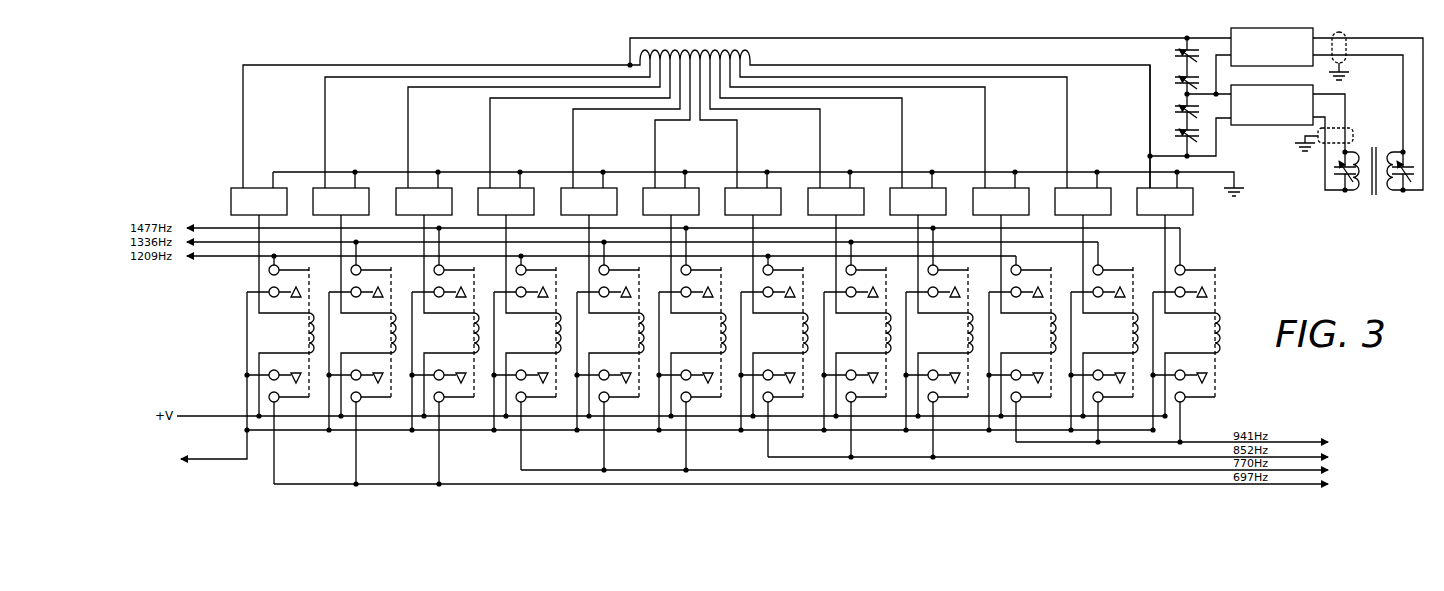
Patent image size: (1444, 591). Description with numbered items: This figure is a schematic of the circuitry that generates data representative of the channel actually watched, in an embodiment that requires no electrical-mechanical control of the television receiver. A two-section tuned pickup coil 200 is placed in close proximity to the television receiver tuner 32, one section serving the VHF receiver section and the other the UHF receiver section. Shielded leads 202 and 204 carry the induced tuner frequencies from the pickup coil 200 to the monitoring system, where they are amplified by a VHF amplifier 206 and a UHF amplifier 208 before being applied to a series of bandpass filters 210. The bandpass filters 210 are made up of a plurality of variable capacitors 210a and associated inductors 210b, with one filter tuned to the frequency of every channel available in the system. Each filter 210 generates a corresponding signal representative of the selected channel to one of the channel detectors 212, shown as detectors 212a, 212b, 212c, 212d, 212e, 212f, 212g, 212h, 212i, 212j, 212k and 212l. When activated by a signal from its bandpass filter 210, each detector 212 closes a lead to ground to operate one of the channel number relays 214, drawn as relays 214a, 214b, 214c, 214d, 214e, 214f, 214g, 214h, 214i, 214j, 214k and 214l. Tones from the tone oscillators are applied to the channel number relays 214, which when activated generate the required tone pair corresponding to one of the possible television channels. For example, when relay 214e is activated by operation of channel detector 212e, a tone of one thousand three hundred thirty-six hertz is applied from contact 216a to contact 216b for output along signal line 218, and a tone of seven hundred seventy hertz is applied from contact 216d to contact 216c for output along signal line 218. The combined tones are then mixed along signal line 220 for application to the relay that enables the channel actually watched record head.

The antenna output terminals (transformer core) 32 is at (1374, 196).
The output transformer 200 is at (1374, 176).
The capacitor to ground 202 is at (1348, 35).
The shielded capacitance 204 is at (1352, 133).
The VHF amplifier 206 is at (1292, 30).
The UHF amplifier 208 is at (1283, 126).
The tuned circuit 210 is at (1166, 98).
The variable capacitors 210a is at (1193, 48).
The tapped coil 210b is at (708, 50).
The channel selector switches 212 is at (226, 205).
The channel 1 switch 212a is at (259, 188).
The channel 2 switch 212b is at (341, 188).
The channel 3 switch 212c is at (424, 188).
The channel 4 switch 212d is at (506, 188).
The channel 5 switch 212e is at (589, 188).
The channel 6 switch 212f is at (671, 188).
The channel 7 switch 212g is at (753, 188).
The channel 8 switch 212h is at (836, 188).
The channel 9 switch 212i is at (918, 188).
The channel 10 switch 212j is at (1001, 188).
The channel 11 switch 212k is at (1083, 188).
The channel 12 switch 212l is at (1194, 209).
The relays 214 is at (242, 344).
The relay for channel 1 214a is at (309, 334).
The relay for channel 2 214b is at (391, 334).
The relay for channel 3 214c is at (474, 334).
The relay for channel 4 214d is at (556, 334).
The relay for channel 5 214e is at (593, 344).
The relay for channel 6 214f is at (721, 334).
The relay for channel 7 214g is at (803, 334).
The relay for channel 8 214h is at (886, 334).
The relay for channel 9 214i is at (968, 334).
The relay for channel 10 214j is at (1051, 334).
The relay for channel 11 214k is at (1133, 334).
The relay for channel 12 214l is at (1215, 334).
The relay contact (upper common) 216a is at (608, 271).
The relay contact (normally open) 216b is at (629, 301).
The relay contact (normally closed) 216c is at (629, 368).
The relay contact (lower common) 216d is at (646, 401).
The relay common bus conductor 218 is at (577, 398).
The conductor to relay 184 220 is at (210, 460).